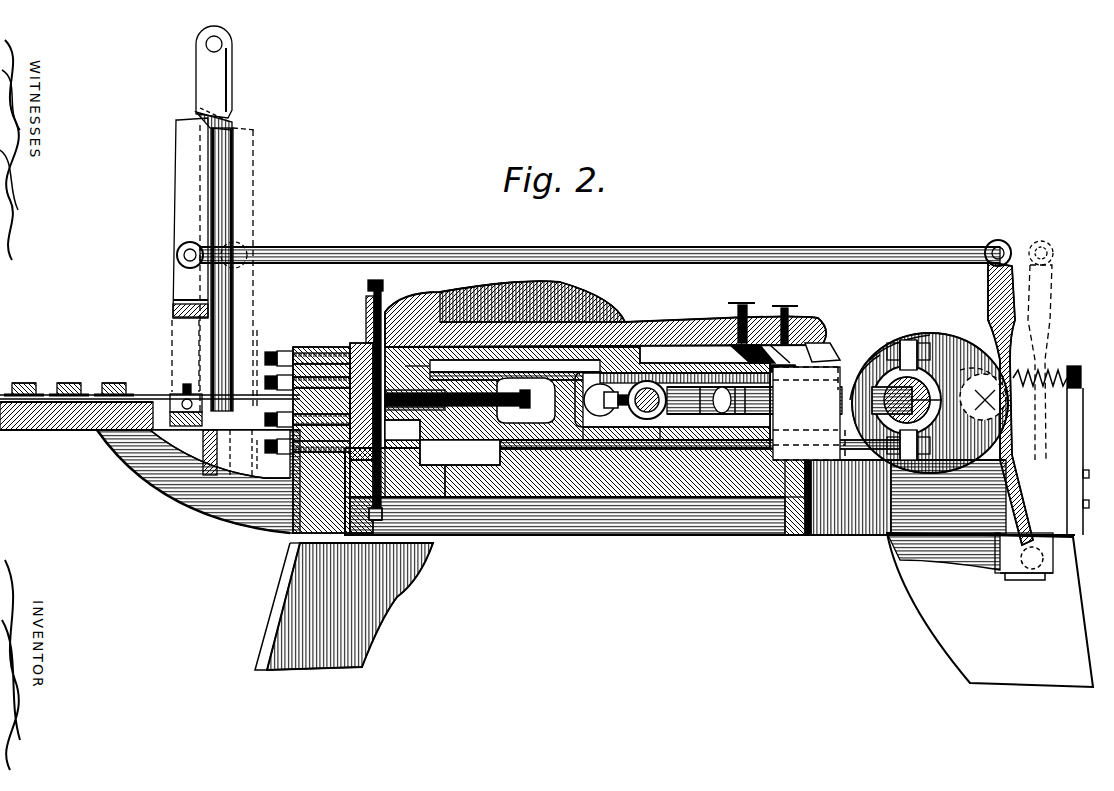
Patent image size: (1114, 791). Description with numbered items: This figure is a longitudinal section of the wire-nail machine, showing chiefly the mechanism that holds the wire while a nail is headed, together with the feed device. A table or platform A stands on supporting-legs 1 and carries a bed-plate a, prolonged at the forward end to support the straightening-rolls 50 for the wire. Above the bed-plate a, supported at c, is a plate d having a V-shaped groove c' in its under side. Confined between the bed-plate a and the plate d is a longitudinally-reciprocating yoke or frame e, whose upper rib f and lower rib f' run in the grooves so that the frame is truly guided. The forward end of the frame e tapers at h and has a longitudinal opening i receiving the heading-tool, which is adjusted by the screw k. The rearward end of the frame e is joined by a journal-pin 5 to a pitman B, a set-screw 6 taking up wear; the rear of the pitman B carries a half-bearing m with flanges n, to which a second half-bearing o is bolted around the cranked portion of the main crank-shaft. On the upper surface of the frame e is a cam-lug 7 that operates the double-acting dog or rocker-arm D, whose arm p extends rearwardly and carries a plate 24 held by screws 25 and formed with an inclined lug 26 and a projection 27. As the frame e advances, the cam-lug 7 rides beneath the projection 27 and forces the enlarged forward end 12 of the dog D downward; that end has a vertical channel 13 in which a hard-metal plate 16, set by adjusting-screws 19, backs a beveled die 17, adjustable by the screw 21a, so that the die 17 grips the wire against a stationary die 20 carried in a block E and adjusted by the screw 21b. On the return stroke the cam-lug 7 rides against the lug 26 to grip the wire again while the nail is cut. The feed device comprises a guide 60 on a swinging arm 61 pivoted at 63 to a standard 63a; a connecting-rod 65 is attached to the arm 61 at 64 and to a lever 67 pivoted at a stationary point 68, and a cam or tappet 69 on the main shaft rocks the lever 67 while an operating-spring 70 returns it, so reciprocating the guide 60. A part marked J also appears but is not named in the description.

The supporting-legs 1 is at (375, 632).
The journal-pin 5 is at (605, 400).
The set-screw 6 is at (1003, 247).
The cam-lug 7 is at (785, 358).
The enlarged portion 12 is at (302, 347).
The vertical channel or groove 13 is at (358, 345).
The supporting and adjusting plate 16 is at (368, 300).
The die 17 is at (386, 305).
The adjusting-screws 19 is at (278, 340).
The stationary die 20 is at (420, 482).
The adjusting-screw 21a is at (382, 283).
The adjusting-screw 21b is at (383, 520).
The plate 24 is at (785, 318).
The screws 25 is at (745, 305).
The inclined lug 26 is at (838, 343).
The lug or projection 27 is at (823, 325).
The straightening-rolls 50 is at (92, 392).
The guide 60 is at (220, 454).
The swinging arm 61 is at (180, 290).
The pivotal attachment 63 is at (222, 44).
The standard or upright 63a is at (235, 190).
The movable connection 64 is at (177, 255).
The connecting-rod 65 is at (556, 258).
The lever 67 is at (995, 286).
The stationary pivot point 68 is at (1032, 568).
The cam or tappet 69 is at (1035, 368).
The operating-spring 70 is at (1075, 388).
The table or platform A is at (790, 490).
The pitman B is at (810, 430).
The double-acting dog or rocker-arm D is at (420, 312).
The stationary block E is at (265, 440).
The bracket J is at (181, 395).
The bed-plate a is at (50, 432).
The support c is at (985, 394).
The V-shaped groove c' is at (685, 342).
The plate d is at (608, 347).
The longitudinally-reciprocating yoke or frame e is at (500, 380).
The upper V-shaped rib or tongue f is at (641, 352).
The lower V-shaped rib or tongue f' is at (660, 501).
The tapering forward end h is at (402, 431).
The longitudinal opening i is at (454, 452).
The adjusting screw k is at (470, 400).
The half-bearing m is at (884, 370).
The flanges n is at (900, 343).
The half-bearing o is at (935, 355).
The arm p is at (590, 300).